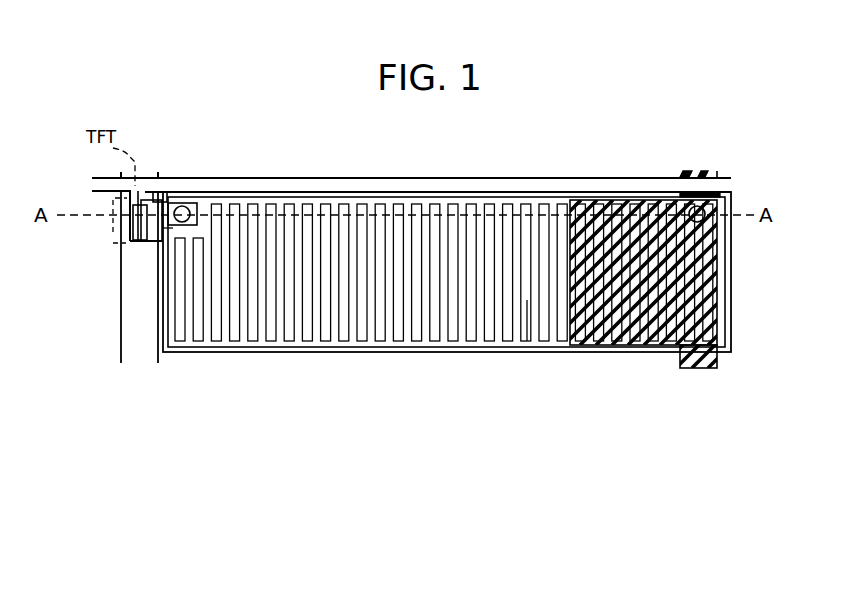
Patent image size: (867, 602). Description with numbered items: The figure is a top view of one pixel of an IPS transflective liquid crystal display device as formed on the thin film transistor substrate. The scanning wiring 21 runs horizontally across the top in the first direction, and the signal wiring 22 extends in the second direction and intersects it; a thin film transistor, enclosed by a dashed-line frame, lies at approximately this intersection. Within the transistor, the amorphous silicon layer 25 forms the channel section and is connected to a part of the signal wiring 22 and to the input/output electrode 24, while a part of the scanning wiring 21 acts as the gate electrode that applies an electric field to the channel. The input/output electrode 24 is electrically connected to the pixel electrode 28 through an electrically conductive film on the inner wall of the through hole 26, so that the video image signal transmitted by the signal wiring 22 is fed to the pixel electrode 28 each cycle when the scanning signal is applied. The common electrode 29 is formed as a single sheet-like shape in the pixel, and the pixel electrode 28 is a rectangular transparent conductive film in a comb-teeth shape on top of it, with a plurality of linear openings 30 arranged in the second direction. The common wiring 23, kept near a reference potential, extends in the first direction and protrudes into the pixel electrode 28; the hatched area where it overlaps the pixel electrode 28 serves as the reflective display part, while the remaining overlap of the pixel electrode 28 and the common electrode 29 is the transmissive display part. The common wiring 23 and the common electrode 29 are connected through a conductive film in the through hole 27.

The scanning wiring 21 is at (130, 323).
The signal wiring 22 is at (331, 184).
The common wiring 23 is at (698, 363).
The input/output electrode 24 is at (162, 233).
The amorphous silicon layer 25 is at (148, 226).
The through hole 26 is at (187, 208).
The through hole 27 is at (697, 203).
The pixel electrode 28 is at (298, 338).
The common electrode 29 is at (383, 353).
The openings 30 is at (523, 336).